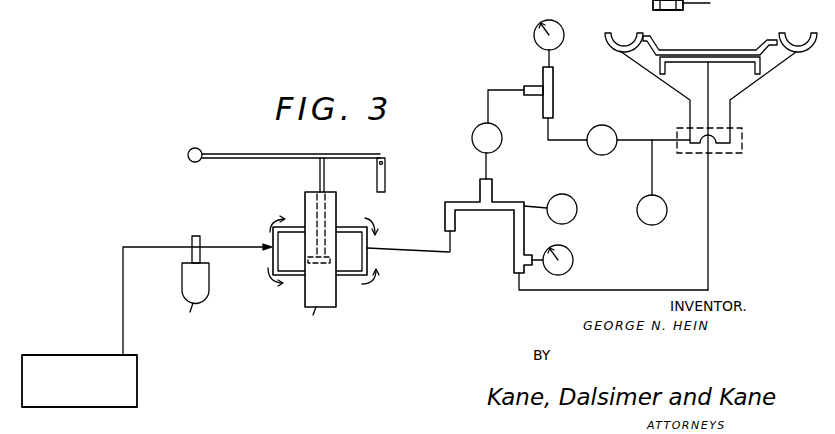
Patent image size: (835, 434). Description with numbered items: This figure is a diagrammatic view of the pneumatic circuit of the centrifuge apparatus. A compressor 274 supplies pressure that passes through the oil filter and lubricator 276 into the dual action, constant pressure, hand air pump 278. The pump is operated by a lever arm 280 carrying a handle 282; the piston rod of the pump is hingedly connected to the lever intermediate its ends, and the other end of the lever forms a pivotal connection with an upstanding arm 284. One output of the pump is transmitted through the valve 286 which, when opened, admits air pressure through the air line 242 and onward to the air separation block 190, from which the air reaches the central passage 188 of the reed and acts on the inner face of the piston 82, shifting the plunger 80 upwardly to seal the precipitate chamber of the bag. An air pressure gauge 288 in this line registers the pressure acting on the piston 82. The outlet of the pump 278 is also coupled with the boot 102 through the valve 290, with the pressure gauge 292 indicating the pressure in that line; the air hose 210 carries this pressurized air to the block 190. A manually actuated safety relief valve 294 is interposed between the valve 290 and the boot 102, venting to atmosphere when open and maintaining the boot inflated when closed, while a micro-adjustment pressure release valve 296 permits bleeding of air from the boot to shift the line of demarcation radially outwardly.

The compressor 274 is at (79, 346).
The oil filter and lubricator 276 is at (182, 290).
The hand air pump 278 is at (336, 291).
The lever arm 280 is at (268, 161).
The handle 282 is at (189, 161).
The upstanding arm 284 is at (386, 190).
The valve 286 is at (578, 220).
The air pressure gauge 288 is at (578, 263).
The valve 290 is at (473, 141).
The pressure gauge 292 is at (533, 43).
The safety relief valve 294 is at (622, 117).
The micro-adjustment pressure release valve 296 is at (663, 220).
The air hose 210 is at (670, 141).
The air separation block 190 is at (744, 136).
The central passage of the reed 188 is at (710, 176).
The air hose 242 is at (707, 277).
The boot 102 is at (612, 50).
The plunger 80 is at (733, 55).
The piston 82 is at (697, 62).